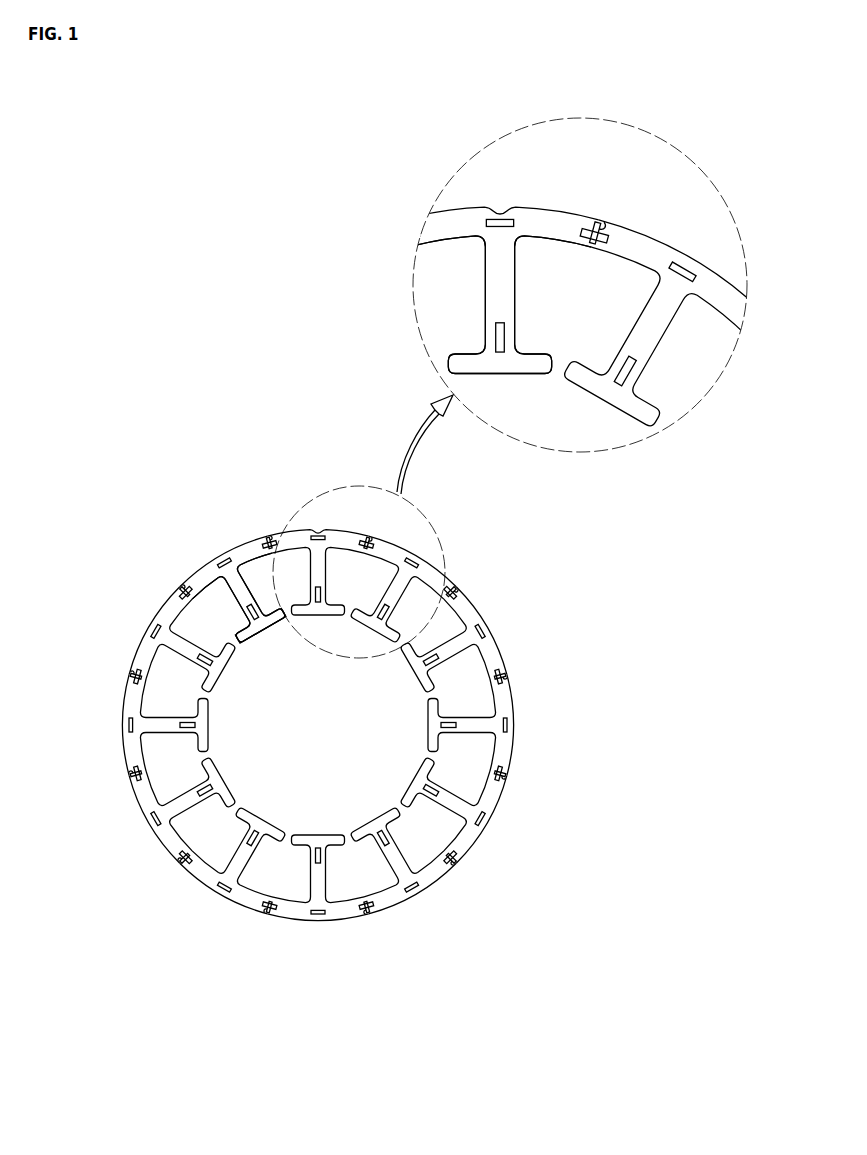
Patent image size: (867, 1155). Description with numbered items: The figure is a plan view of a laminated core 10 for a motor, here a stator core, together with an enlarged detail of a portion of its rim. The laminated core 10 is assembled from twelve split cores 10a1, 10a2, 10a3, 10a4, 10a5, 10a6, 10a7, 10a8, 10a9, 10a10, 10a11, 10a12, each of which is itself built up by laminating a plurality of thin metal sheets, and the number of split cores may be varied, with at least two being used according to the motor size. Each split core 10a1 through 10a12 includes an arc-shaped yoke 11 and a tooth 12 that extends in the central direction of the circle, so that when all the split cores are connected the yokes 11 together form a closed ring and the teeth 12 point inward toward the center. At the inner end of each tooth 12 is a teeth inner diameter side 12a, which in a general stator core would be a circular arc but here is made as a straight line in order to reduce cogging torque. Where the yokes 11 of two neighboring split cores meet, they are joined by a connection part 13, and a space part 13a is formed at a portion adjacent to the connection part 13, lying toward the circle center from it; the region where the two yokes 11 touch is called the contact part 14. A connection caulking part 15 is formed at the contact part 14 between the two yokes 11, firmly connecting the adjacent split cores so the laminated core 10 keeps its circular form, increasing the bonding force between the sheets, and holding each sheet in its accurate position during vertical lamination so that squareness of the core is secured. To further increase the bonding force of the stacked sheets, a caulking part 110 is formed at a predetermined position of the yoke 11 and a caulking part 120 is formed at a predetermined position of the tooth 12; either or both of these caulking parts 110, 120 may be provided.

The laminated core 10 is at (238, 474).
The split core 10a1 is at (212, 889).
The split core 10a2 is at (149, 823).
The split core 10a3 is at (122, 723).
The split core 10a4 is at (150, 632).
The split core 10a5 is at (226, 553).
The split core 10a6 is at (315, 530).
The split core 10a7 is at (419, 552).
The split core 10a8 is at (484, 624).
The split core 10a9 is at (515, 722).
The split core 10a10 is at (492, 814).
The split core 10a11 is at (424, 889).
The split core 10a12 is at (318, 921).
The yoke 11 is at (172, 600).
The teeth 12 is at (238, 598).
The teeth inner diameter side 12a is at (260, 630).
The connection part 13 is at (600, 216).
The space part 13a is at (598, 216).
The contact part 14 is at (598, 242).
The connection caulking part 15 is at (268, 541).
The caulking part 110 is at (215, 565).
The caulking part 120 is at (489, 335).